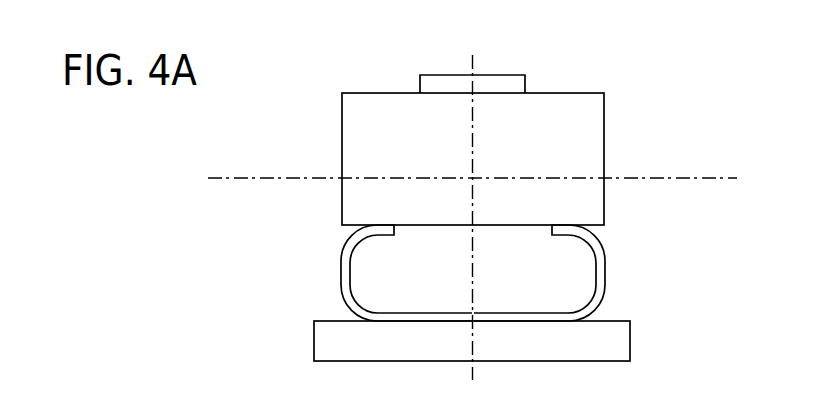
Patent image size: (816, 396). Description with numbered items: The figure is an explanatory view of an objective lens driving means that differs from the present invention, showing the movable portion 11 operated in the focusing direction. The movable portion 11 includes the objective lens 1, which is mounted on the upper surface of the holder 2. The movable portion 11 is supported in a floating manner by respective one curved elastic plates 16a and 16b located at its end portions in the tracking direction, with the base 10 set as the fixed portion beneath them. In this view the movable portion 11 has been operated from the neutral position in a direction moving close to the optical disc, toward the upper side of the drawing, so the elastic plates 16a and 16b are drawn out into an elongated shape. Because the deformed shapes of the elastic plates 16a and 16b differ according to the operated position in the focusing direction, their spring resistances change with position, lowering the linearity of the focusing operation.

The movable portion 11 is at (377, 58).
The objective lens 1 is at (503, 75).
The holder 2 is at (561, 93).
The curved elastic plate 16a is at (341, 273).
The curved elastic plate 16b is at (605, 273).
The base 10 is at (314, 340).